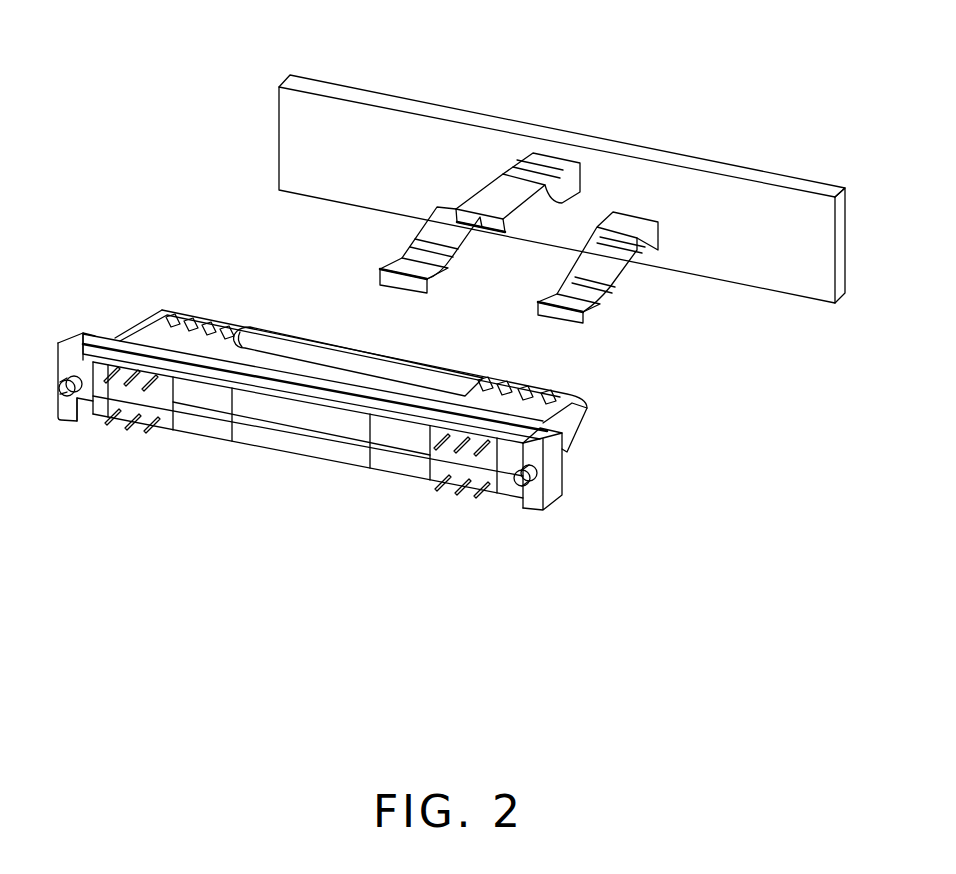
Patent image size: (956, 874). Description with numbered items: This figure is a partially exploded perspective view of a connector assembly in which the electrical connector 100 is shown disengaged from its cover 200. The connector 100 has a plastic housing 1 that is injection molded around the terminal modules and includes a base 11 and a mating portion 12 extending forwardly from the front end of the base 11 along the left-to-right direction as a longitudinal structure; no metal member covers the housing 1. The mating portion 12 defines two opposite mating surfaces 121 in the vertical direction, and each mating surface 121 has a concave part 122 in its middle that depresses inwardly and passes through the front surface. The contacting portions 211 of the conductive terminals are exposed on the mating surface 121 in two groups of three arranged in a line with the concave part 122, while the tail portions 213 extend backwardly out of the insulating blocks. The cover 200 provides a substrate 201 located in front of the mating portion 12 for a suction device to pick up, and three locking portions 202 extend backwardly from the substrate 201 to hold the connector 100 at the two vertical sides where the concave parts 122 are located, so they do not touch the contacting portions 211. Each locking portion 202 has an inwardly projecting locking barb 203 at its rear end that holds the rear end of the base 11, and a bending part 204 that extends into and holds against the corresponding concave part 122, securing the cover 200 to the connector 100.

The housing 1 is at (381, 400).
The base 11 is at (552, 473).
The mating portion 12 is at (394, 337).
The electrical connector 100 is at (313, 385).
The mating surface 121 is at (150, 335).
The concave part 122 is at (307, 348).
The contacting portion 211 is at (562, 392).
The tail portion 213 is at (480, 497).
The cover 200 is at (562, 177).
The substrate 201 is at (776, 176).
The locking portion 202 is at (499, 196).
The locking barb 203 is at (397, 267).
The bending part 204 is at (561, 192).